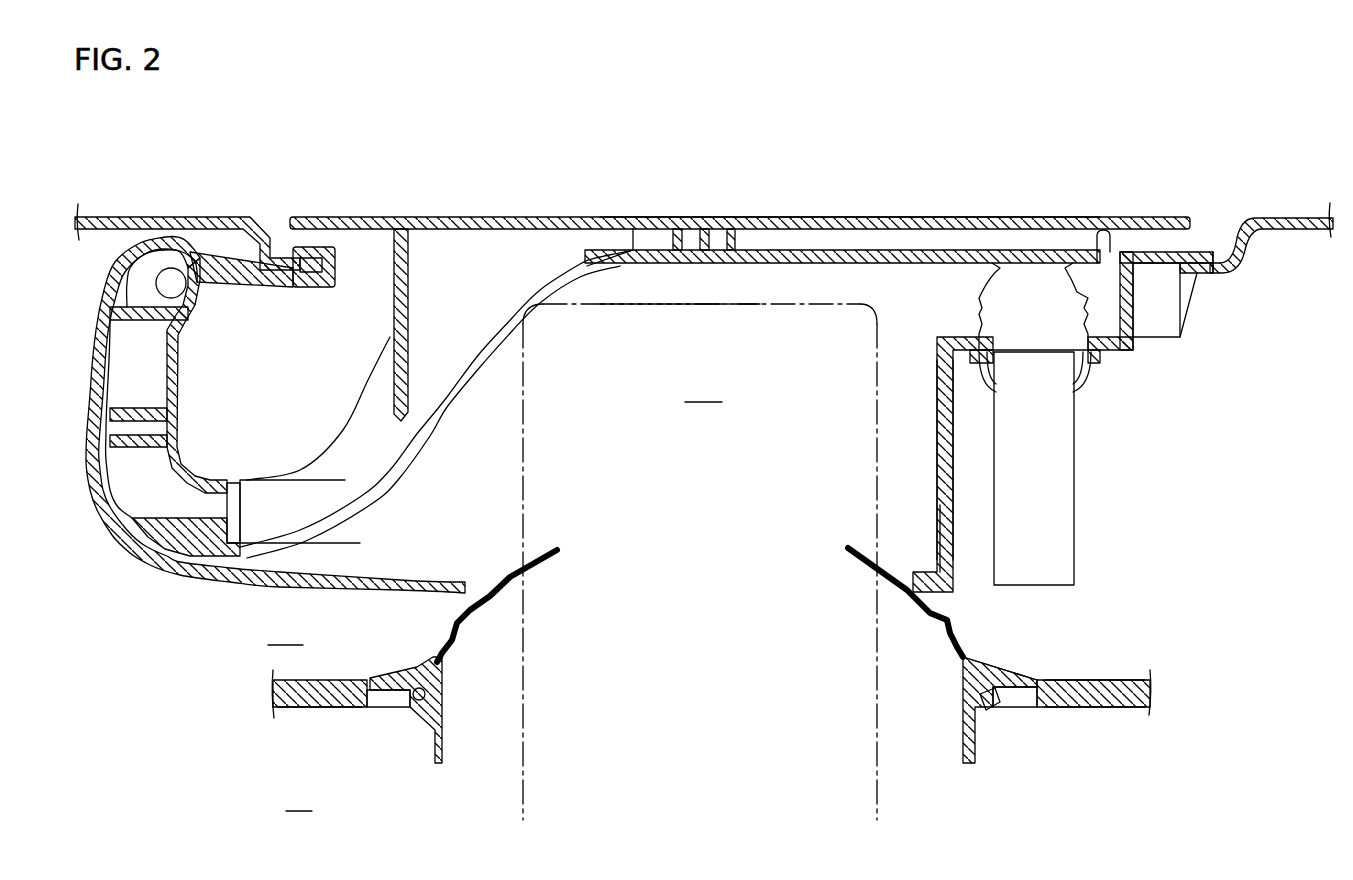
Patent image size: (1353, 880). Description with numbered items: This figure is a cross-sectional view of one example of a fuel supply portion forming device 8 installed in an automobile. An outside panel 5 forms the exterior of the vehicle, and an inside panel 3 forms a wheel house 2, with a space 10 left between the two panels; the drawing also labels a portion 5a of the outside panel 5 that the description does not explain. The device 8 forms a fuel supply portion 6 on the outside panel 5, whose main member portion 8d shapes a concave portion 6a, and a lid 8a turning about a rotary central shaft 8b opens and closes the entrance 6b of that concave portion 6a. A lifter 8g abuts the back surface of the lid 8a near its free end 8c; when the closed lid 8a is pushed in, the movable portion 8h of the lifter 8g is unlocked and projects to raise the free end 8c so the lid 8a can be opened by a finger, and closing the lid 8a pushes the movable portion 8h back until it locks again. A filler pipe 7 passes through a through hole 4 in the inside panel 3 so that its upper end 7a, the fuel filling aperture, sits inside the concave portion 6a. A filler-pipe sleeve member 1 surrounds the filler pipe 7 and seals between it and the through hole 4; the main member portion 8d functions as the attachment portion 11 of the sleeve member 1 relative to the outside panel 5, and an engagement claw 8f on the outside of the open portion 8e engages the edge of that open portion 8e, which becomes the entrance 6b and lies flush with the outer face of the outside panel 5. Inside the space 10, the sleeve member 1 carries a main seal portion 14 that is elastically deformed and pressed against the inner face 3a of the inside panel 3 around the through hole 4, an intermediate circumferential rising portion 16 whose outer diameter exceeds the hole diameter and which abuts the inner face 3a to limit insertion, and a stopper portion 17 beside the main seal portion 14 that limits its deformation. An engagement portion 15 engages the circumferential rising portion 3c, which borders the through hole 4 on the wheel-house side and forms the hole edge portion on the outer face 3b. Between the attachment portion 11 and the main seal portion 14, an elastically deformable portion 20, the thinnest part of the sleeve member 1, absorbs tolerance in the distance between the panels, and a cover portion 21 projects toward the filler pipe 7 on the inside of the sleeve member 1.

The filler-pipe sleeve member 1 is at (955, 490).
The wheel house 2 is at (320, 759).
The inside panel 3 is at (1150, 680).
The inner face 3a is at (1107, 680).
The outer face 3b is at (1115, 708).
The circumferential rising portion 3c is at (392, 702).
The through hole 4 is at (440, 693).
The outside panel 5 is at (1275, 220).
The engaging portion of roof panel 5a is at (318, 252).
The fuel supply portion 6 is at (1093, 190).
The concave portion 6a is at (700, 562).
The entrance 6b is at (706, 270).
The filler pipe 7 is at (715, 680).
The upper end 7a is at (757, 300).
The fuel supply portion forming device 8 is at (918, 190).
The lid 8a is at (958, 219).
The rotary central shaft 8b is at (172, 283).
The free end 8c is at (1196, 222).
The main member portion 8d is at (955, 425).
The open portion 8e is at (636, 262).
The engagement claw 8f is at (1190, 285).
The lifter 8g is at (1050, 480).
The movable portion 8h is at (1035, 305).
The space 10 is at (275, 440).
The attachment portion 11 is at (940, 380).
The main seal portion 14 is at (1022, 668).
The engagement portion 15 is at (989, 712).
The intermediate circumferential rising portion 16 is at (963, 675).
The stopper portion 17 is at (1020, 702).
The elastically deformable portion 20 is at (960, 630).
The cover portion 21 is at (550, 548).